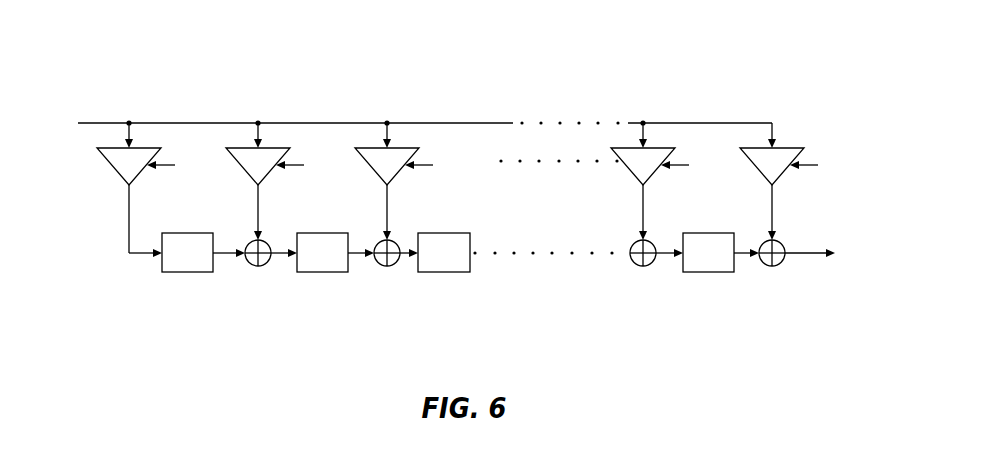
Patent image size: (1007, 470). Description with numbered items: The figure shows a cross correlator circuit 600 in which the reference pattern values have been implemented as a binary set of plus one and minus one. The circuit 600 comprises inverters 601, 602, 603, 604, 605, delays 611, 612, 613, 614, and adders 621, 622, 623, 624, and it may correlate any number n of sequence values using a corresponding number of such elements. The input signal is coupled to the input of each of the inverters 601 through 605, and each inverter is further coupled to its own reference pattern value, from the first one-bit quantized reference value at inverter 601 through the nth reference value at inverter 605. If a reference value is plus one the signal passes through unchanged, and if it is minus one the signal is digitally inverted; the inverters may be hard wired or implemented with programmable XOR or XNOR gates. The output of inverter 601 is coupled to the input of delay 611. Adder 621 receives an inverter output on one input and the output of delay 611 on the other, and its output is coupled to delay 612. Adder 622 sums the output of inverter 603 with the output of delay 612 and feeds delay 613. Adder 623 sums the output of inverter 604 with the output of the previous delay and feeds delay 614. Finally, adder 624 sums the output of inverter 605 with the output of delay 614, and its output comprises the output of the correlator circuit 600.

The cross correlator circuit 600 is at (130, 31).
The inverter 601 is at (110, 164).
The inverter 602 is at (243, 167).
The inverter 603 is at (372, 167).
The inverter 604 is at (628, 167).
The inverter 605 is at (757, 167).
The delay 611 is at (182, 272).
The delay 612 is at (333, 272).
The delay 613 is at (465, 272).
The delay 614 is at (717, 272).
The adder 621 is at (258, 266).
The adder 622 is at (392, 266).
The adder 623 is at (645, 266).
The adder 624 is at (777, 266).